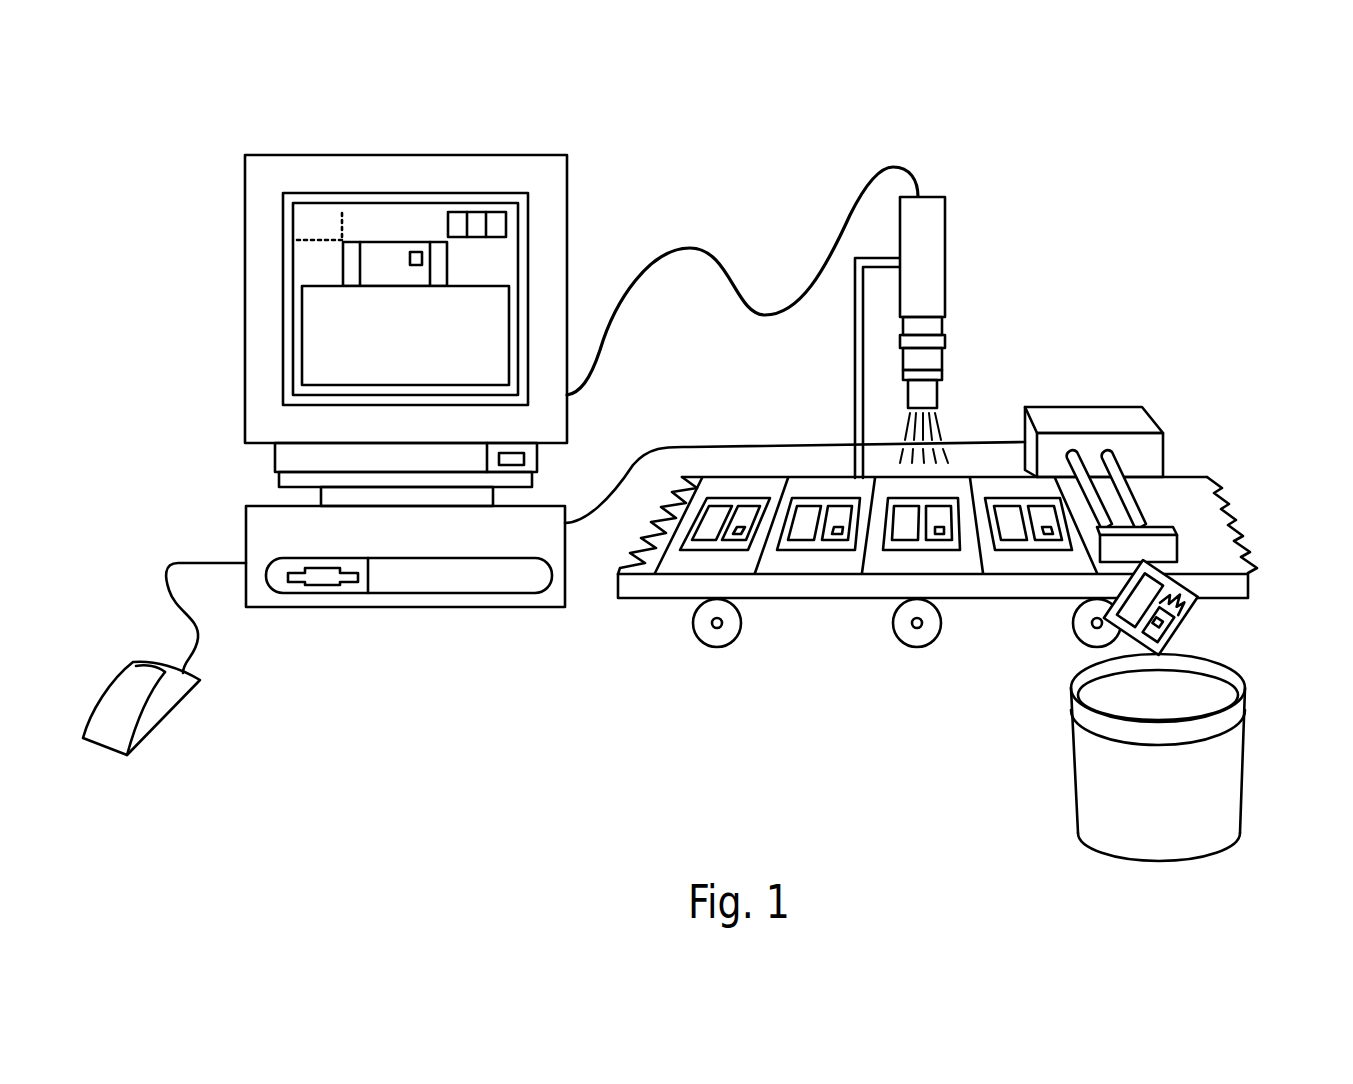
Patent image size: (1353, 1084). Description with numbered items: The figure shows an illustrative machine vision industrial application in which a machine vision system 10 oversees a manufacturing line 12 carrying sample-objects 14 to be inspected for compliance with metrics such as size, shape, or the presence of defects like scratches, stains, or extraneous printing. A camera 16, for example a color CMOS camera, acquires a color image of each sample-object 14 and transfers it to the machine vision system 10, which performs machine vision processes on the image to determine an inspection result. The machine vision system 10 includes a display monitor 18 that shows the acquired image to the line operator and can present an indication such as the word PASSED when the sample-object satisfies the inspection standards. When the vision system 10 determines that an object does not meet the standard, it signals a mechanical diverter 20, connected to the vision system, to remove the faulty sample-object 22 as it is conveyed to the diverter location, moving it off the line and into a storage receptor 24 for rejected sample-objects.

The machine vision system 10 is at (246, 520).
The manufacturing line 12 is at (683, 672).
The sample-objects 14 is at (950, 548).
The camera 16 is at (945, 248).
The display monitor 18 is at (567, 258).
The mechanical diverter 20 is at (1163, 457).
The faulty sample-object 22 is at (1182, 620).
The storage receptor 24 is at (1072, 745).